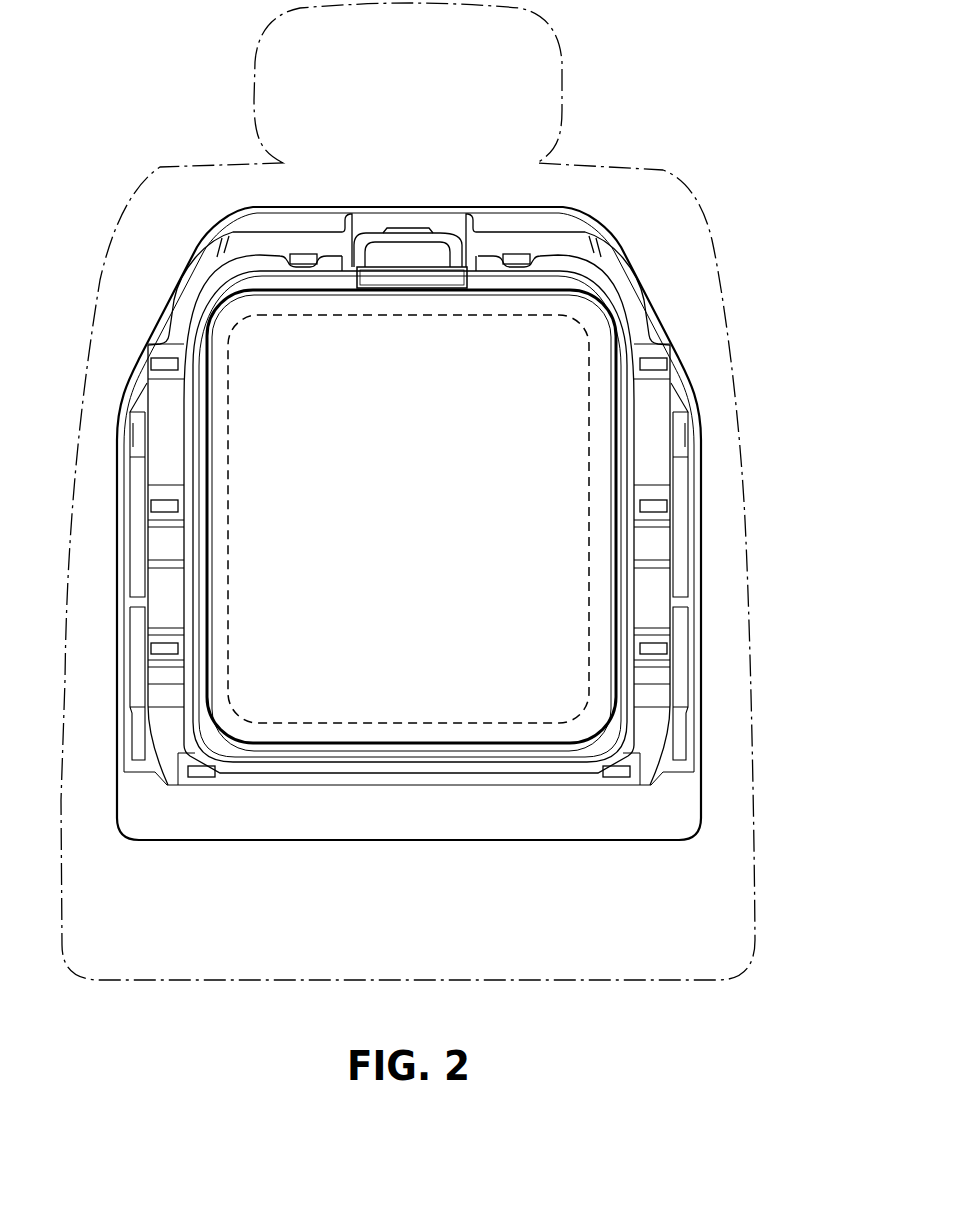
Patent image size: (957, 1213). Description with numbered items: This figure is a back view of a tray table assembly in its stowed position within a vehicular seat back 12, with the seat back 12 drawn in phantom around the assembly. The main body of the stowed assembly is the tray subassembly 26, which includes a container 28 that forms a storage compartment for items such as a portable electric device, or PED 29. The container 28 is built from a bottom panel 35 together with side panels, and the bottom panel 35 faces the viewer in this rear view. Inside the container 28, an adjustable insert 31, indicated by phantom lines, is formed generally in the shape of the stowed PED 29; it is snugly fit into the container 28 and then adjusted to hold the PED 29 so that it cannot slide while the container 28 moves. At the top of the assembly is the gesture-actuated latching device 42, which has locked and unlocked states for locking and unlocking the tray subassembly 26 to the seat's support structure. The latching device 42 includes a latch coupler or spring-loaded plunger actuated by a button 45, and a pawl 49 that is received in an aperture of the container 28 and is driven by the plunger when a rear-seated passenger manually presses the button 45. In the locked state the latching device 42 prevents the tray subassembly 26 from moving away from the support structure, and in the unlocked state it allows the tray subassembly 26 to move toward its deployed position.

The vehicular seat back 12 is at (663, 170).
The tray subassembly 26 is at (630, 353).
The container 28 is at (629, 478).
The PED 29 is at (647, 560).
The adjustable insert 31 is at (605, 625).
The bottom panel 35 is at (418, 678).
The latching device 42 is at (437, 205).
The button 45 is at (428, 261).
The pawl 49 is at (412, 289).